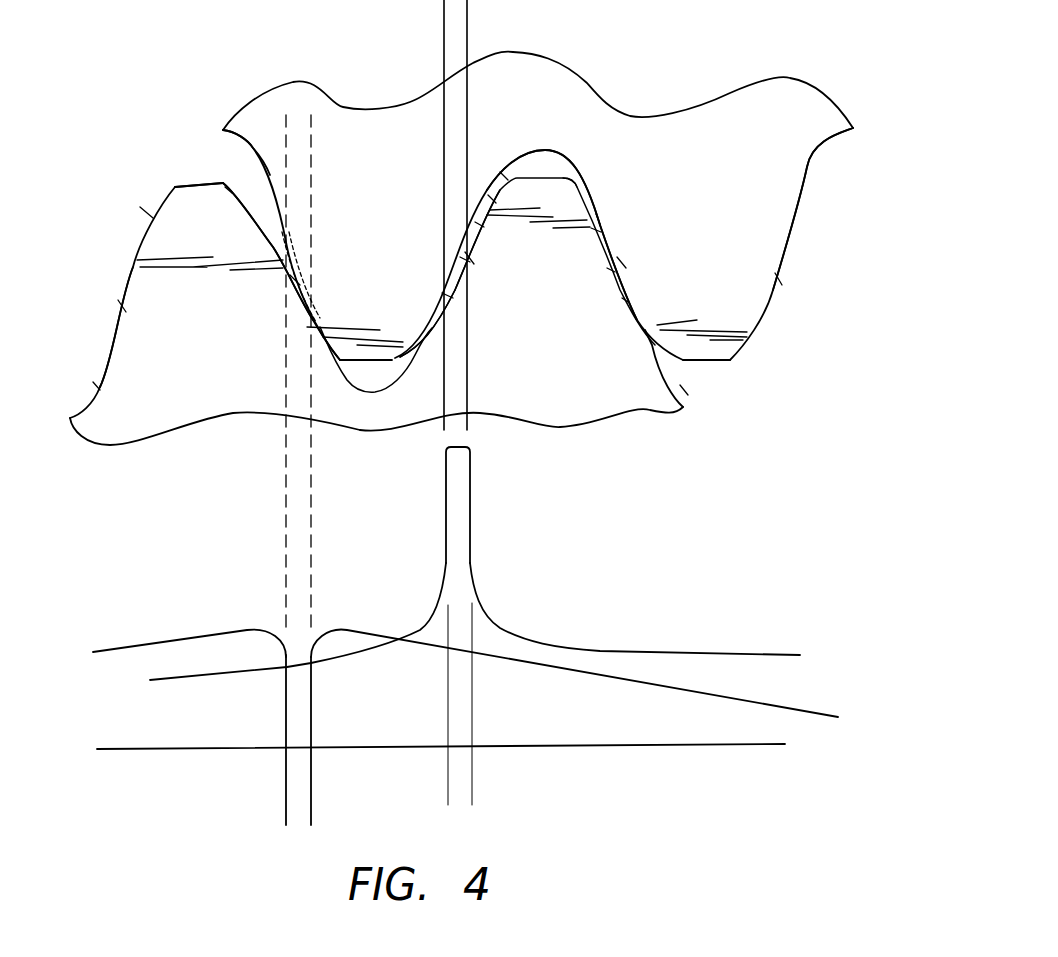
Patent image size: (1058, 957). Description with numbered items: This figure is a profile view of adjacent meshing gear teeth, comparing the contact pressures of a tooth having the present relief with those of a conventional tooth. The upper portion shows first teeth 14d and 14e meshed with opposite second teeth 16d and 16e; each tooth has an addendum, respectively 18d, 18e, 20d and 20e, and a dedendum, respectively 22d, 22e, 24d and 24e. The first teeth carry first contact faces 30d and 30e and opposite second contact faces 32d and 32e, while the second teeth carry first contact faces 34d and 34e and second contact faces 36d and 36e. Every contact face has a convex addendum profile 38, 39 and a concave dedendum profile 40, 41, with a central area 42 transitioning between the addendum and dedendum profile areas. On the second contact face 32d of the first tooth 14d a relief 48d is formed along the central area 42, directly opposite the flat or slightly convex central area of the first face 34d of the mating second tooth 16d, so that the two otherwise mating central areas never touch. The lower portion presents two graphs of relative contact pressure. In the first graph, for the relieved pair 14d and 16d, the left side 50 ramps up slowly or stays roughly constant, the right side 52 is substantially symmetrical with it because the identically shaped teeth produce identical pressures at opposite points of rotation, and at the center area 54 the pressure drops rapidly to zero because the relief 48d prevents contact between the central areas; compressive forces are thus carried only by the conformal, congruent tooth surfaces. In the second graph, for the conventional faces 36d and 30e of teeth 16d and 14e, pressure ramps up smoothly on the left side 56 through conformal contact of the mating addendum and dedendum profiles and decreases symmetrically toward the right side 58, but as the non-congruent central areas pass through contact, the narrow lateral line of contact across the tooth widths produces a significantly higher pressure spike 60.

The first tooth 14d is at (150, 247).
The first tooth 14e is at (607, 253).
The second tooth 16d is at (408, 128).
The second tooth 16e is at (745, 207).
The addendum 18d is at (173, 202).
The addendum 18e is at (520, 152).
The addendum 20d is at (373, 358).
The addendum 20e is at (732, 346).
The dedendum 22d is at (160, 410).
The dedendum 22e is at (572, 410).
The dedendum 24d is at (373, 132).
The dedendum 24e is at (700, 128).
The first contact face 30d is at (117, 340).
The first contact face 30e is at (425, 333).
The second contact face 32d is at (287, 227).
The second contact face 32e is at (633, 295).
The first contact face 34d is at (272, 183).
The first contact face 34e is at (590, 248).
The second contact face 36d is at (480, 222).
The second contact face 36e is at (801, 195).
The convex addendum profile 38 is at (153, 218).
The convex addendum profile 39 is at (337, 330).
The concave dedendum profile 40 is at (97, 387).
The concave dedendum profile 41 is at (255, 157).
The central area 42 is at (123, 307).
The relief 48d is at (297, 290).
The left side of first graph 50 is at (123, 648).
The right side of first graph 52 is at (762, 700).
The center area of first graph 54 is at (300, 695).
The left side of second graph 56 is at (242, 667).
The right side of second graph 58 is at (678, 650).
The pressure spike 60 is at (471, 470).